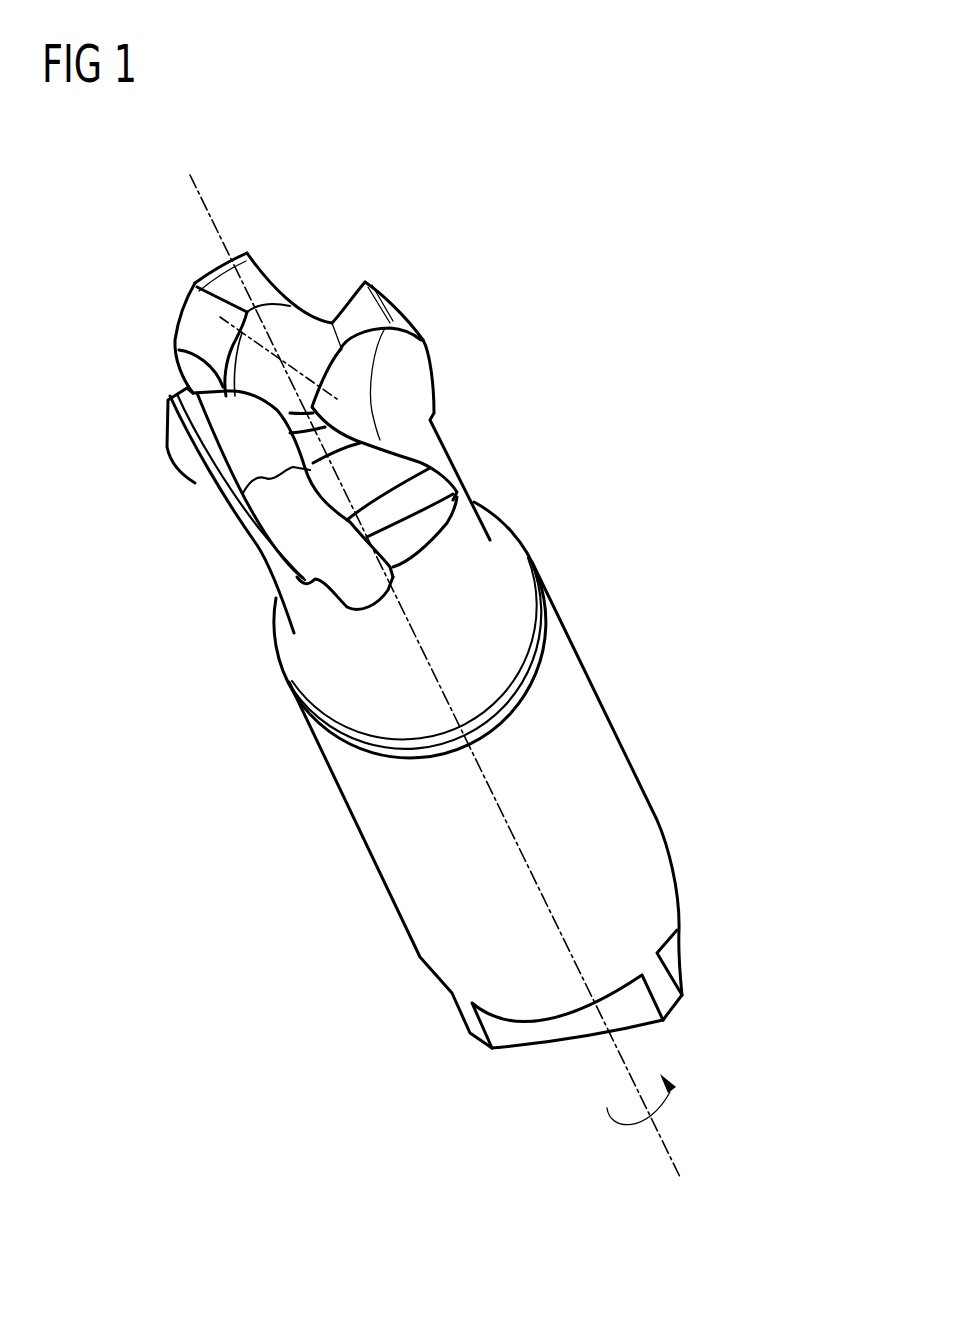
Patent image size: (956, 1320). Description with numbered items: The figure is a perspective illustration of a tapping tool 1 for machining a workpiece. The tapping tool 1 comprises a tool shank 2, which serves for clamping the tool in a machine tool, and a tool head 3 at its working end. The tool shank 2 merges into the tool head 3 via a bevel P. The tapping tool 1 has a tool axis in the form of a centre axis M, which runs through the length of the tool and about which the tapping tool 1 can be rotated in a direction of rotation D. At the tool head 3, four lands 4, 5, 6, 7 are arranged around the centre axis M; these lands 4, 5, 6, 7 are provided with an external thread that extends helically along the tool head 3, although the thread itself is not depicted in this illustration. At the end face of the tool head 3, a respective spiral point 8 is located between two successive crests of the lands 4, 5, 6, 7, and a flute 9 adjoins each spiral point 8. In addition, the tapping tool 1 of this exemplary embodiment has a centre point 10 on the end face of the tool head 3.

The tapping tool 1 is at (562, 220).
The tool shank 2 is at (650, 838).
The tool head 3 is at (513, 598).
The land 4 is at (183, 453).
The land 5 is at (375, 475).
The land 6 is at (383, 292).
The land 7 is at (218, 283).
The spiral point 8 is at (202, 330).
The flute 9 is at (202, 363).
The centre point 10 is at (297, 330).
The bevel P is at (302, 697).
The direction of rotation D is at (648, 1120).
The centre axis M is at (672, 1158).